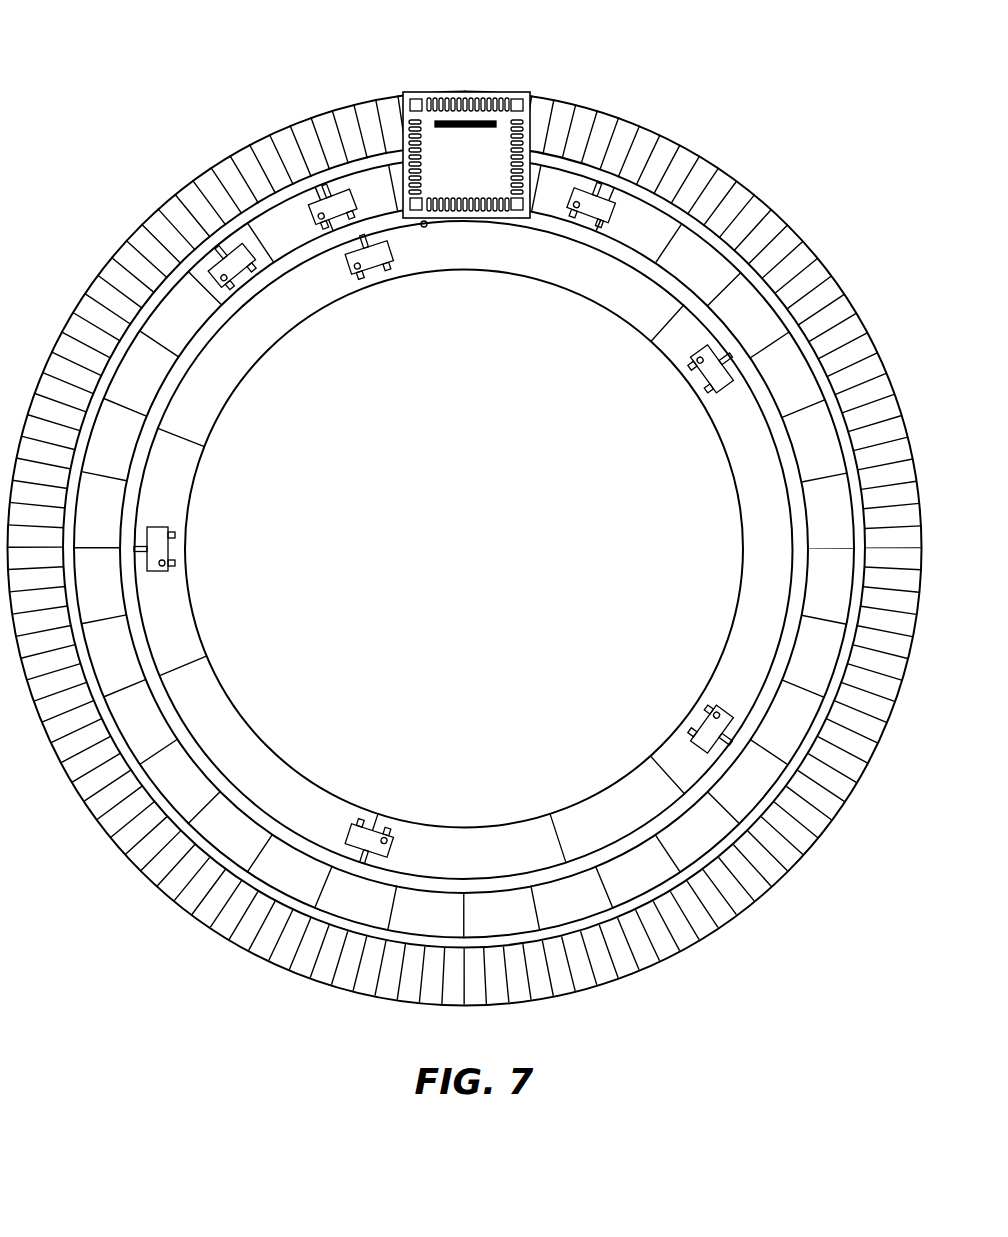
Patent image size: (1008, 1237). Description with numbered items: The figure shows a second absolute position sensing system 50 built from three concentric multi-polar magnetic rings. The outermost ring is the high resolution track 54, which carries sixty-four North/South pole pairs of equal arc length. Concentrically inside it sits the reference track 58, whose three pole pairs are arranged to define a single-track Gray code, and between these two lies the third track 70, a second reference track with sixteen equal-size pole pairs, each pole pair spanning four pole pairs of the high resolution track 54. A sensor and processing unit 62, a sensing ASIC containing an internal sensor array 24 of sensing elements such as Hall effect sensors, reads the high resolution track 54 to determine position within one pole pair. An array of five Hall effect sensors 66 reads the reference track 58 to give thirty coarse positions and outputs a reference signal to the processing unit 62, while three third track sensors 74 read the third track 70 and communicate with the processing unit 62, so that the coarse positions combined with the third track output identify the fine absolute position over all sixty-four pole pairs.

The internal sensor array 24 is at (460, 125).
The second absolute position sensing system 50 is at (807, 162).
The high resolution track 54 is at (138, 230).
The reference track 58 is at (733, 482).
The sensor and processing unit 62 is at (530, 140).
The Hall effect sensors 66 is at (355, 833).
The third track 70 is at (836, 338).
The third track sensors 74 is at (582, 193).